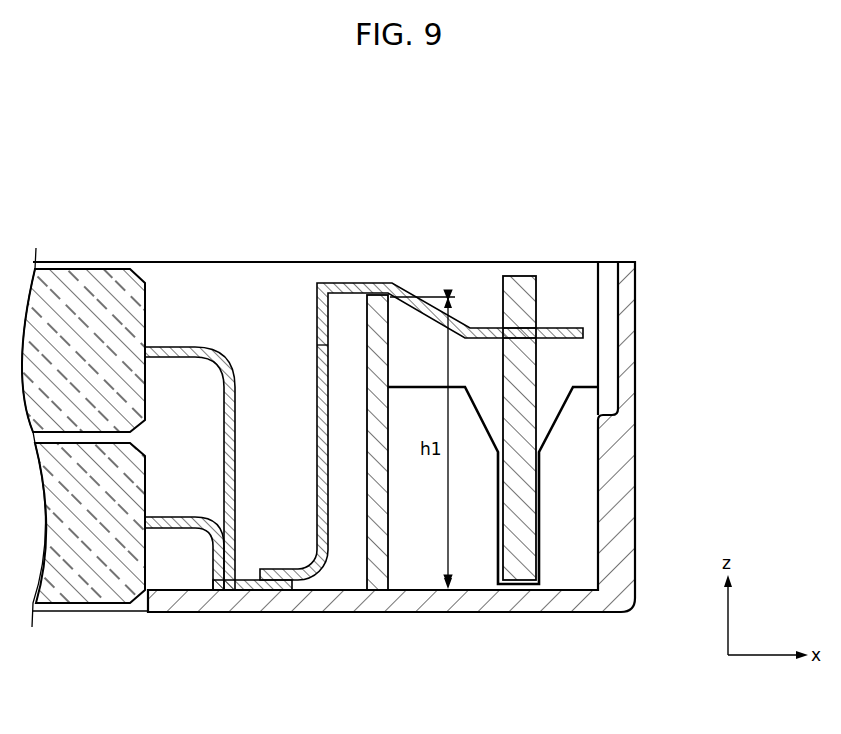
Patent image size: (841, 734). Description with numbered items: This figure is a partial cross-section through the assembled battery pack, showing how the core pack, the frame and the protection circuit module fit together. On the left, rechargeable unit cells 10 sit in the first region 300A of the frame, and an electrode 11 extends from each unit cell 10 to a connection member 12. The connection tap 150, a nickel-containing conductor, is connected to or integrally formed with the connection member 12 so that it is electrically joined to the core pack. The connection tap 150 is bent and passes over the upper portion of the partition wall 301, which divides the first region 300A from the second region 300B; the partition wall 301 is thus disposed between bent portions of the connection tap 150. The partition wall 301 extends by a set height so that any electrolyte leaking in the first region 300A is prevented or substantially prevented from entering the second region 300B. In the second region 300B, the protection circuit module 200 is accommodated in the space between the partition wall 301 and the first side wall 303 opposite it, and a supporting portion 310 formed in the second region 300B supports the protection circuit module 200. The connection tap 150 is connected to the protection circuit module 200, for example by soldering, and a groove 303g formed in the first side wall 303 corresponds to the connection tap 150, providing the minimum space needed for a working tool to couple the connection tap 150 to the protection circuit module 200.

The unit cell 10 is at (100, 286).
The electrode 11 is at (191, 343).
The connection member 12 is at (320, 572).
The connection tap 150 is at (340, 283).
The protection circuit module 200 is at (530, 276).
The first region 300A is at (258, 292).
The second region 300B is at (472, 292).
The partition wall 301 is at (381, 295).
The first side wall 303 is at (630, 508).
The groove 303g is at (604, 306).
The supporting portion 310 is at (586, 466).